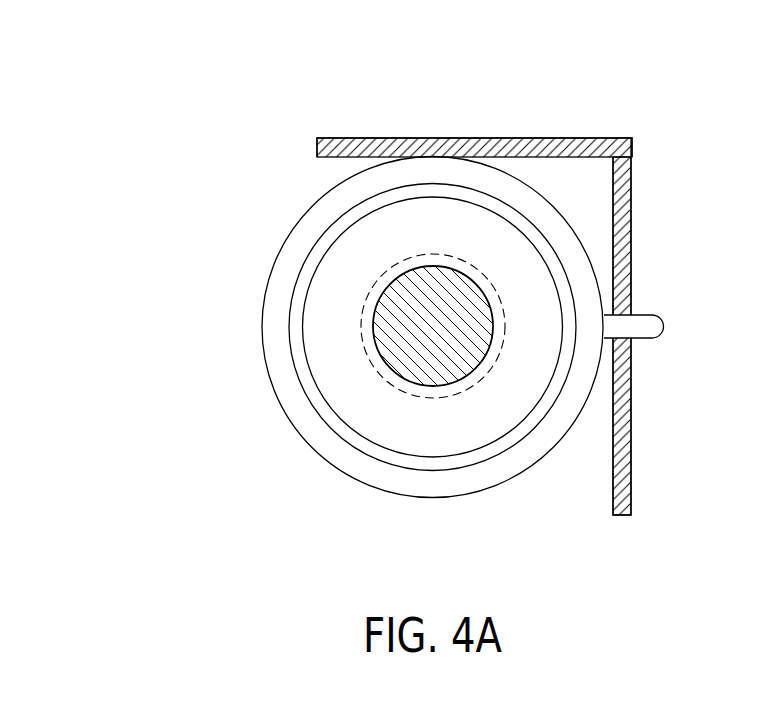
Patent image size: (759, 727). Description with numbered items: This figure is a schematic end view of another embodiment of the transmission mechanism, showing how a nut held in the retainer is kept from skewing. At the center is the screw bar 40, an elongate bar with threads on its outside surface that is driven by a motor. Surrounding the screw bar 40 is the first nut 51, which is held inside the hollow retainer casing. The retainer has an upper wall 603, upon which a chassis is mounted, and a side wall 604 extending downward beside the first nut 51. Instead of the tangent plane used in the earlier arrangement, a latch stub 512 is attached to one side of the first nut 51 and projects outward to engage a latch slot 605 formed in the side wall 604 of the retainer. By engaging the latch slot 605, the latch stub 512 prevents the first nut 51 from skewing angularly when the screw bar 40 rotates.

The upper wall 603 is at (393, 143).
The side wall 604 is at (631, 193).
The latch slot 605 is at (628, 340).
The latch stub 512 is at (658, 312).
The first nut 51 is at (273, 285).
The screw bar 40 is at (398, 330).